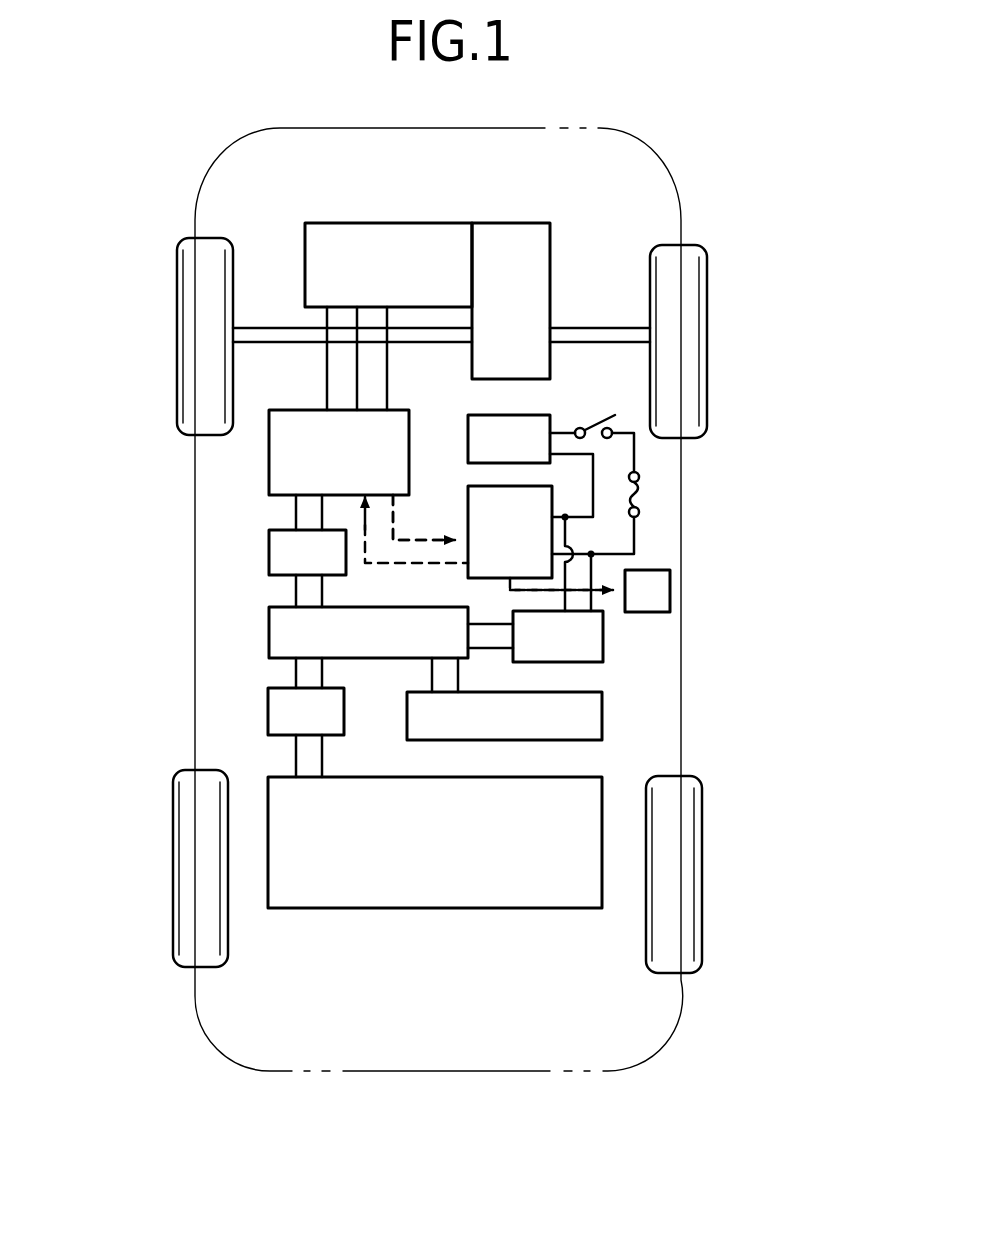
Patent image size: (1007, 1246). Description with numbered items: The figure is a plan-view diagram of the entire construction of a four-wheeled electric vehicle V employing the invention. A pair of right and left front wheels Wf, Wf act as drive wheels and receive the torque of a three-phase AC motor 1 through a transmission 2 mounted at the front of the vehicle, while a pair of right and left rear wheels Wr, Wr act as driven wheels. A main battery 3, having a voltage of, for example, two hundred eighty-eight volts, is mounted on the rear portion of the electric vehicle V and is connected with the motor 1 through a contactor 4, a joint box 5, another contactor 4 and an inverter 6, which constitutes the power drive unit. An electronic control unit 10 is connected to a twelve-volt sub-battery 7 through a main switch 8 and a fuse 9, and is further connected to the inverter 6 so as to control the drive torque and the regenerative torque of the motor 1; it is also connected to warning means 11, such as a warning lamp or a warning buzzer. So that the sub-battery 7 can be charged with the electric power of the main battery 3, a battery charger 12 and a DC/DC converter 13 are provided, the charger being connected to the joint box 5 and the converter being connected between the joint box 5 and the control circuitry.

The three-phase AC motor 1 is at (382, 287).
The transmission 2 is at (502, 315).
The main battery 3 is at (421, 858).
The contactor 4 is at (190, 553).
The joint box 5 is at (363, 648).
The inverter 6 is at (186, 481).
The sub-battery 7 is at (499, 455).
The main switch 8 is at (598, 420).
The fuse 9 is at (640, 495).
The electronic control unit 10 is at (528, 548).
The warning means 11 is at (718, 690).
The battery charger 12 is at (490, 732).
The DC/DC converter 13 is at (541, 652).
The electric vehicle V is at (689, 564).
The front wheel Wf is at (177, 316).
The rear wheel Wr is at (173, 884).